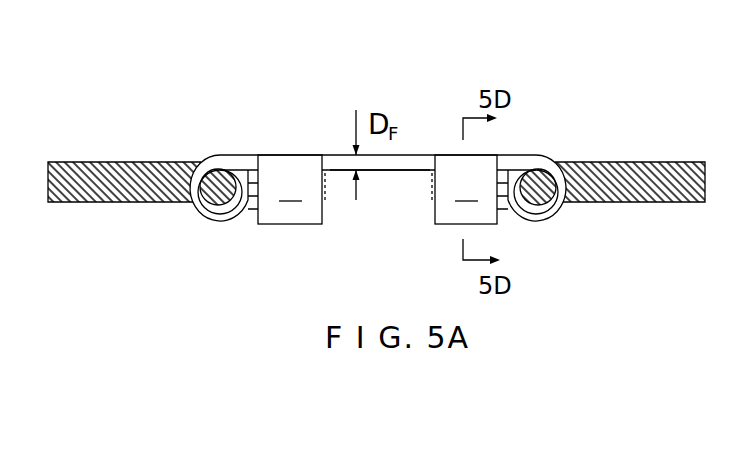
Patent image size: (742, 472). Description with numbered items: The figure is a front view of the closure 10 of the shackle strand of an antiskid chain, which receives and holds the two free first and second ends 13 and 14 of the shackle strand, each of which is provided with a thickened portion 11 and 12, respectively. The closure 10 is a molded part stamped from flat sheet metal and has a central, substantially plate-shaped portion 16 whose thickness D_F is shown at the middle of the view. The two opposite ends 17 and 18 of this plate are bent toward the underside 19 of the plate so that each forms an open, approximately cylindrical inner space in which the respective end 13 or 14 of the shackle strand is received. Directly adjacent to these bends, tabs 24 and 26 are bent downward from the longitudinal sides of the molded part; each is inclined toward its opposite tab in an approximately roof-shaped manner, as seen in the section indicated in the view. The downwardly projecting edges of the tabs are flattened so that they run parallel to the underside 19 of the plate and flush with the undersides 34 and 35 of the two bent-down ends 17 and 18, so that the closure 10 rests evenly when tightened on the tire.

The closure 10 is at (285, 108).
The thickened portion 11 is at (250, 212).
The thickened portion 12 is at (510, 212).
The first end of the shackle strand 13 is at (140, 162).
The second end of the shackle strand 14 is at (630, 163).
The central plate-shaped portion 16 is at (407, 160).
The bent end 17 is at (200, 142).
The bent end 18 is at (545, 143).
The underside of the plate 19 is at (388, 172).
The tab 24 is at (291, 189).
The tab 26 is at (464, 189).
The underside of bent end 34 is at (213, 223).
The underside of bent end 35 is at (545, 222).